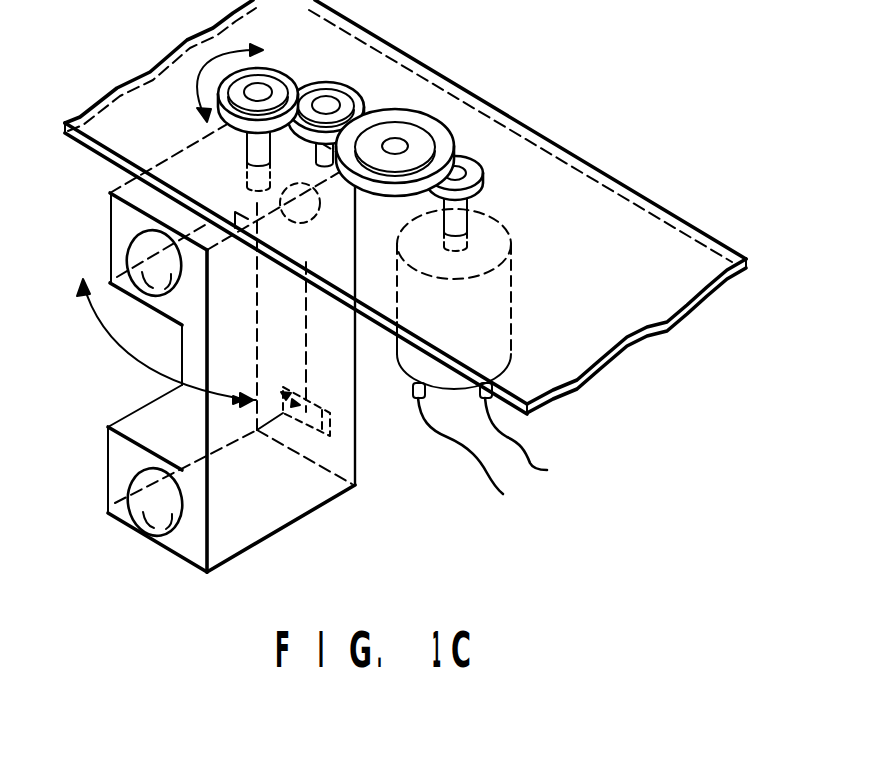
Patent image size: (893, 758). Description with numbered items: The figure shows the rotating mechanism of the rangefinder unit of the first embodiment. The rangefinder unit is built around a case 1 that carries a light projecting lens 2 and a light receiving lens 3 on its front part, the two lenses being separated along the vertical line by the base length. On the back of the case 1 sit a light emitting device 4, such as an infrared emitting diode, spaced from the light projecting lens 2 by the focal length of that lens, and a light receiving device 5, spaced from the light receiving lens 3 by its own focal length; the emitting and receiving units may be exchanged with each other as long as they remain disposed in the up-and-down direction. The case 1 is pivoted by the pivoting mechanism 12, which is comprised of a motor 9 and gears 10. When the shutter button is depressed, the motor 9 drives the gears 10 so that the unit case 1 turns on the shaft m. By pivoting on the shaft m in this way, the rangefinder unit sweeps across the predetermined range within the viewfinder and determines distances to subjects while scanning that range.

The case 1 is at (355, 483).
The light projecting lens 2 is at (127, 262).
The light receiving lens 3 is at (142, 512).
The light emitting device 4 is at (312, 216).
The light receiving device 5 is at (333, 431).
The motor 9 is at (511, 283).
The gears 10 is at (452, 82).
The pivoting mechanism 12 is at (615, 435).
The shaft m is at (246, 173).